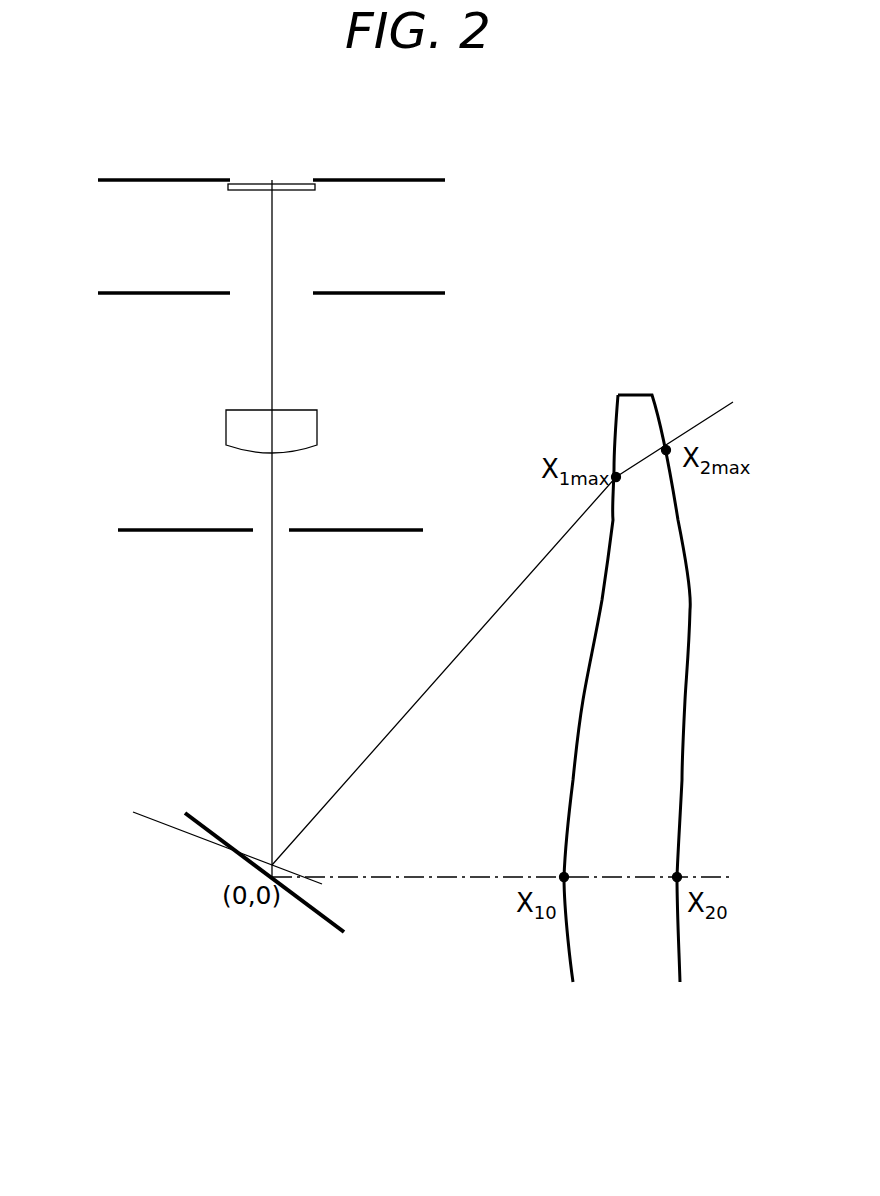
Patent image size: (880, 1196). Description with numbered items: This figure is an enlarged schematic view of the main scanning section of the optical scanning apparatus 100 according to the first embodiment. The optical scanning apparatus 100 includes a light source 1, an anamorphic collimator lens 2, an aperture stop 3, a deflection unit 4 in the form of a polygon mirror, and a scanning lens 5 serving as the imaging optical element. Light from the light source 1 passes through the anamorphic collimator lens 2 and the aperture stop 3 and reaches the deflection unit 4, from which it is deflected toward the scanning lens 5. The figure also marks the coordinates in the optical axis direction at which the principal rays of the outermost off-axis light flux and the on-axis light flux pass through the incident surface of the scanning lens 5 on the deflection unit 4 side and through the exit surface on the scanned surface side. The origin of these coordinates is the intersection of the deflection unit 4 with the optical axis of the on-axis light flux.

The light source 1 is at (378, 178).
The anamorphic collimator lens 2 is at (120, 292).
The aperture stop 3 is at (226, 430).
The deflection unit 4 is at (197, 820).
The scanning lens 5 is at (566, 782).
The optical scanning apparatus 100 is at (588, 322).